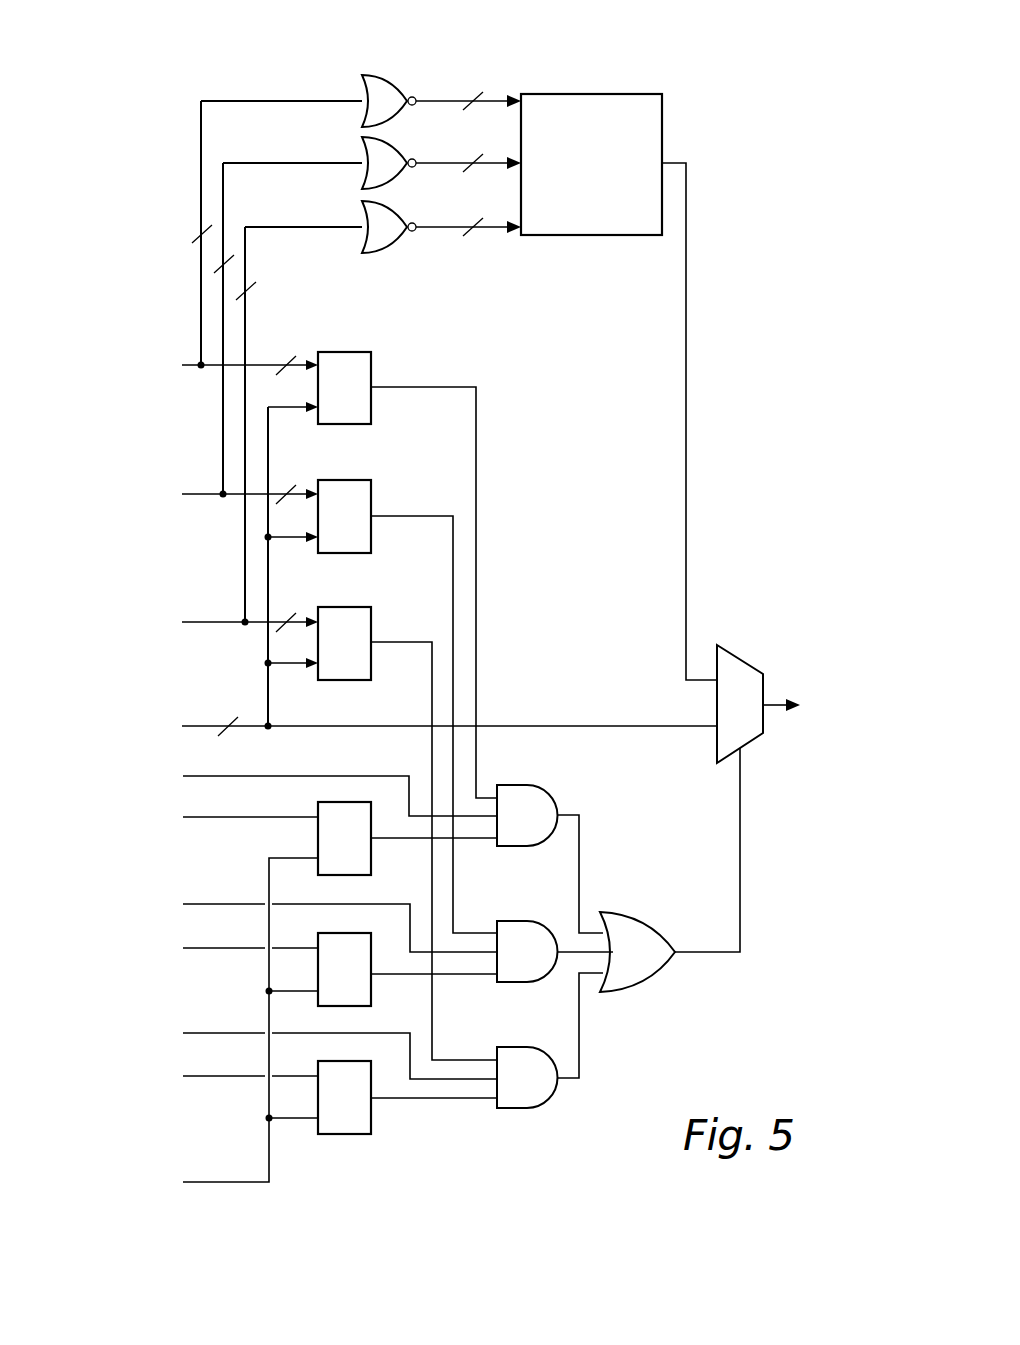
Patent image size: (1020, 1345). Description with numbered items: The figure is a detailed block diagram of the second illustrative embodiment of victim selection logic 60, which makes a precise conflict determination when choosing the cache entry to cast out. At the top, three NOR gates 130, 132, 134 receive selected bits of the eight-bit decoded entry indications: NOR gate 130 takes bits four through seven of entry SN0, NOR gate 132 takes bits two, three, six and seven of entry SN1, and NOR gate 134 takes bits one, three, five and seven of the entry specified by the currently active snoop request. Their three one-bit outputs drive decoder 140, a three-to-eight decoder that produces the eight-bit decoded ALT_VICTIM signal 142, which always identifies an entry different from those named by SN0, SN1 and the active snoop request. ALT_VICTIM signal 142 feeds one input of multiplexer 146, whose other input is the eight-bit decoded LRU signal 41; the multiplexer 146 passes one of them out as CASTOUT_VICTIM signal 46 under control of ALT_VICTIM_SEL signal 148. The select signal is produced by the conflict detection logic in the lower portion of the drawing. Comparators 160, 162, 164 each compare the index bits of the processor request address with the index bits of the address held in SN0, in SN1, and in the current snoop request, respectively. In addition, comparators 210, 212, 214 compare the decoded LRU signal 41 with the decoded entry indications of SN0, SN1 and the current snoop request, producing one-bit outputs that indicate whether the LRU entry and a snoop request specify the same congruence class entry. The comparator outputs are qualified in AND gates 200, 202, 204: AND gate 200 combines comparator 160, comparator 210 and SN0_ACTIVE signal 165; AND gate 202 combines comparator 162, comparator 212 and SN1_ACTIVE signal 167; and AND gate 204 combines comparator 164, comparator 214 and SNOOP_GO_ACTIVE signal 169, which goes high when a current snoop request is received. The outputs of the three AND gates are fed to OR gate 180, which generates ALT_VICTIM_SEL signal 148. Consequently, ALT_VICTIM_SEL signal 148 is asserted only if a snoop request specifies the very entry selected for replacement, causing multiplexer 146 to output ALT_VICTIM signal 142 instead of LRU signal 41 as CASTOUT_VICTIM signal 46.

The victim selection logic 60 is at (747, 56).
The NOR gate 130 is at (385, 75).
The NOR gate 132 is at (392, 182).
The NOR gate 134 is at (392, 248).
The decoder 140 is at (636, 94).
The ALT_VICTIM signal 142 is at (686, 258).
The multiplexer 146 is at (740, 657).
The ALT_VICTIM_SEL signal 148 is at (740, 850).
The LRU signal 41 is at (674, 728).
The CASTOUT_VICTIM signal 46 is at (770, 707).
The comparator 160 is at (372, 877).
The comparator 162 is at (372, 1008).
The comparator 164 is at (372, 1136).
The SN0_ACTIVE signal 165 is at (233, 776).
The SN1_ACTIVE signal 167 is at (199, 904).
The SNOOP_GO_ACTIVE signal 169 is at (212, 1033).
The OR gate 180 is at (660, 964).
The AND gate 200 is at (548, 828).
The AND gate 202 is at (548, 964).
The AND gate 204 is at (548, 1091).
The comparator 210 is at (372, 426).
The comparator 212 is at (372, 555).
The comparator 214 is at (372, 682).